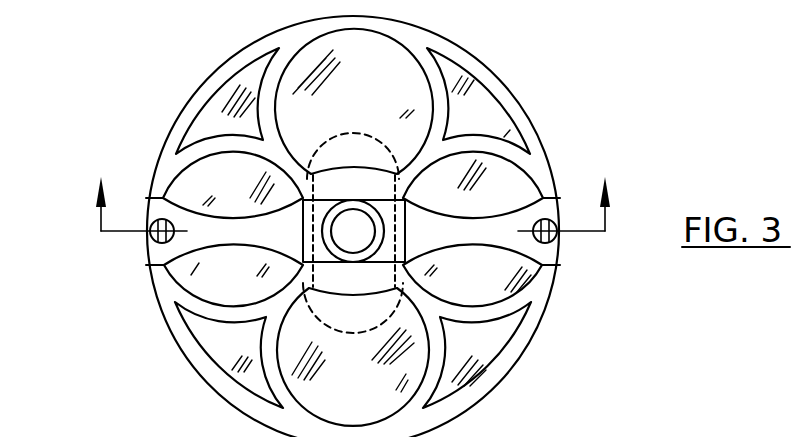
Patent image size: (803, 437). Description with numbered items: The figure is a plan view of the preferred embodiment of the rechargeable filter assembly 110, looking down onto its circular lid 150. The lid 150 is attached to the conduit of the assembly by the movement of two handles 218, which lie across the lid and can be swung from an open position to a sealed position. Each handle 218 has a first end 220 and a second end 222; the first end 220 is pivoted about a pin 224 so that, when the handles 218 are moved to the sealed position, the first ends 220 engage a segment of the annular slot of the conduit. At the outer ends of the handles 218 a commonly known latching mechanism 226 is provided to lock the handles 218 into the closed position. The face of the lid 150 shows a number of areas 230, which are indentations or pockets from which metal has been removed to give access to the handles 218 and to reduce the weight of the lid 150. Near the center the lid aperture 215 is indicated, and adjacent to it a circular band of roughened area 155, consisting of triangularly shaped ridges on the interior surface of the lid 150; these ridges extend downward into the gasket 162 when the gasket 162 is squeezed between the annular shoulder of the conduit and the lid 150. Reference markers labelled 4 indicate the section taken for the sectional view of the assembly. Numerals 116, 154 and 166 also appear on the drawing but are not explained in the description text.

The rechargeable filter assembly 110 is at (494, 56).
The circular lid 150 is at (528, 106).
The areas 230 is at (378, 110).
The handles 218 is at (288, 244).
The central hub housing 116 is at (400, 192).
The first end 220 is at (389, 150).
The pin 224 is at (377, 332).
The central shaft bore 154 is at (355, 240).
The latching mechanism 226 is at (150, 233).
The second end 222 is at (145, 253).
The section line 4- 4 is at (352, 191).
The roughened area 155 is at (206, 436).
The lid aperture 215 is at (236, 428).
The mounting boss 166 is at (497, 427).
The gasket 162 is at (575, 436).